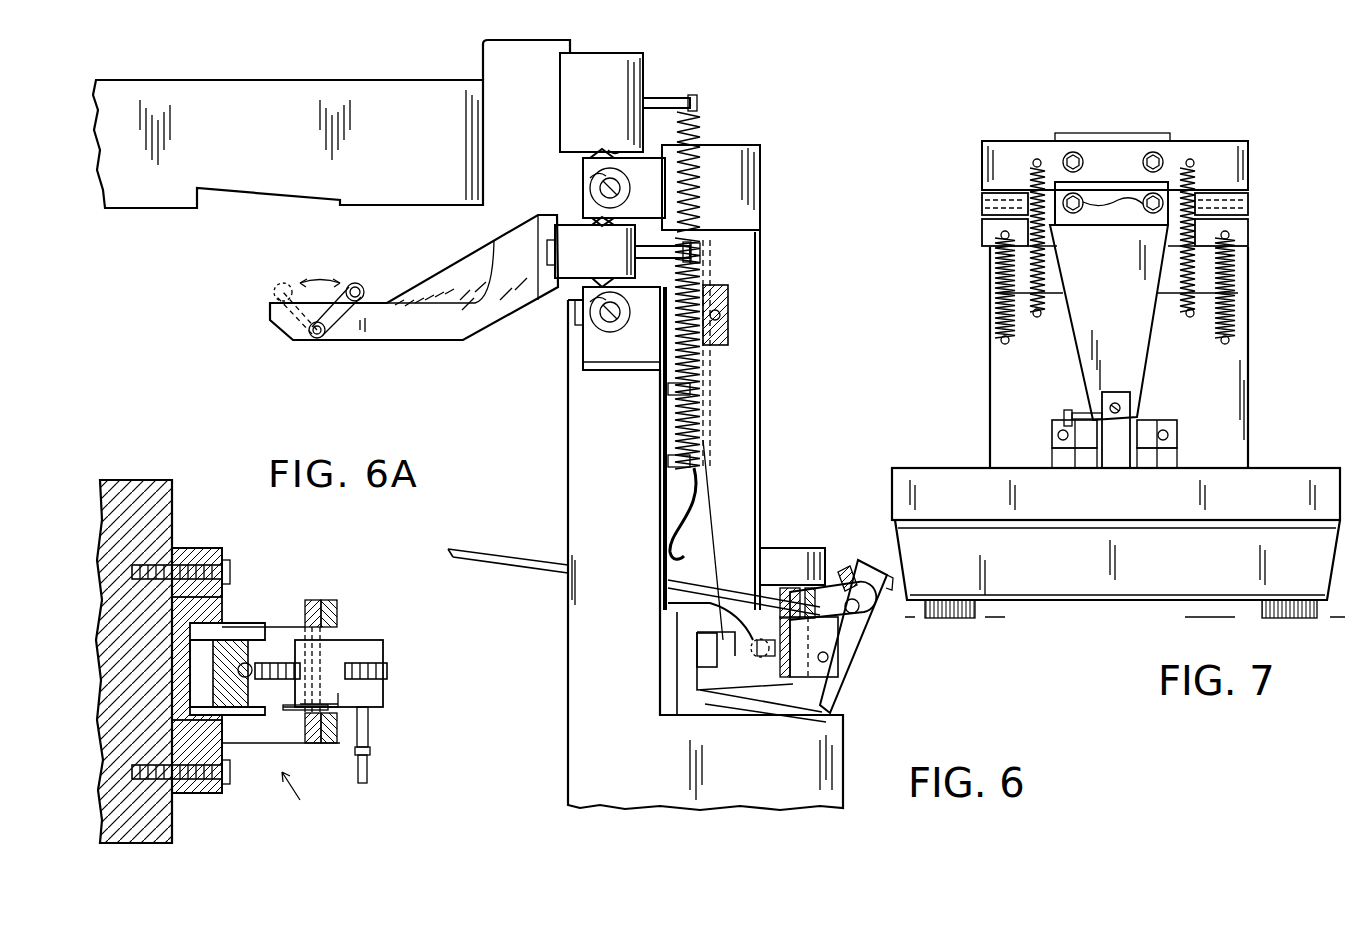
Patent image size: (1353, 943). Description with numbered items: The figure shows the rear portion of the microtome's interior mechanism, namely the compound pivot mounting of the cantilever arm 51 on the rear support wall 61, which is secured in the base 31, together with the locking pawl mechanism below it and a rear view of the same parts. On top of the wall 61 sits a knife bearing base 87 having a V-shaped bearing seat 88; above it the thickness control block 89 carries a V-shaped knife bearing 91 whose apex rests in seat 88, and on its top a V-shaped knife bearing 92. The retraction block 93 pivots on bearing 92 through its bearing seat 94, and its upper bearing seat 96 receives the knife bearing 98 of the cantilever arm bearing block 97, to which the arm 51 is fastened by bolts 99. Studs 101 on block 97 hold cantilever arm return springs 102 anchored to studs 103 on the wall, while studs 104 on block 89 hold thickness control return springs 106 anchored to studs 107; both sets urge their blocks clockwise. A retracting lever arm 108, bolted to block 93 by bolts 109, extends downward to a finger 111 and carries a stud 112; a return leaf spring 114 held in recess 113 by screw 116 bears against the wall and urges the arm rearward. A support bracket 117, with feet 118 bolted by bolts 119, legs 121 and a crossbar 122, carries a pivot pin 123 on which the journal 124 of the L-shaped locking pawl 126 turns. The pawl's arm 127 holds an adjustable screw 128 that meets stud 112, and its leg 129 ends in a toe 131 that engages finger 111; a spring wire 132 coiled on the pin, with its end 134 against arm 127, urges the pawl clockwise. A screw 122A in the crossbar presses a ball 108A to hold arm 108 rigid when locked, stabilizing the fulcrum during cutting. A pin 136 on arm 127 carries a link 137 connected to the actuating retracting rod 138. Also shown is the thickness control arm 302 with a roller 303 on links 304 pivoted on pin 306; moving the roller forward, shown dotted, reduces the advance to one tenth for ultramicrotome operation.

In FIG. 7, the base 31 is at (1072, 572).
In FIG. 6, the cantilever arm 51 is at (283, 95).
In FIG. 6, the rear support wall 61 is at (598, 514).
In FIG. 6A, the rear support wall 61 is at (180, 828).
In FIG. 7, the rear support wall 61 is at (1225, 382).
In FIG. 6, the knife bearing base 87 is at (627, 365).
In FIG. 7, the knife bearing base 87 is at (992, 282).
In FIG. 6, the V-shaped bearing seat 88 is at (592, 295).
In FIG. 6, the thickness control block 89 is at (576, 261).
In FIG. 7, the thickness control block 89 is at (986, 234).
In FIG. 6, the V-shaped knife bearing 91 is at (638, 258).
In FIG. 6, the V-shaped knife bearing 92 is at (624, 188).
In FIG. 6, the retraction block 93 is at (696, 146).
In FIG. 7, the retraction block 93 is at (982, 203).
In FIG. 6, the V-shaped bearing seat 94 is at (598, 212).
In FIG. 6, the V-shaped bearing seat 96 is at (592, 158).
In FIG. 6, the cantilever arm bearing block 97 is at (600, 58).
In FIG. 7, the cantilever arm bearing block 97 is at (1000, 146).
In FIG. 6, the V-shaped knife bearing 98 is at (613, 152).
In FIG. 7, the bolts 99 is at (1145, 160).
In FIG. 6, the studs 101 is at (680, 98).
In FIG. 7, the studs 101 is at (1037, 159).
In FIG. 6, the cantilever arm return springs 102 is at (698, 180).
In FIG. 7, the cantilever arm return springs 102 is at (1030, 178).
In FIG. 6, the studs 103 is at (686, 392).
In FIG. 7, the studs 103 is at (1037, 318).
In FIG. 6, the studs 104 is at (702, 270).
In FIG. 7, the studs 104 is at (1001, 236).
In FIG. 6, the thickness control return springs 106 is at (690, 444).
In FIG. 7, the thickness control return springs 106 is at (997, 312).
In FIG. 6, the studs 107 is at (690, 486).
In FIG. 7, the studs 107 is at (1000, 343).
In FIG. 6, the retracting lever arm 108 is at (745, 452).
In FIG. 6A, the retracting lever arm 108 is at (213, 656).
In FIG. 7, the retracting lever arm 108 is at (1101, 301).
In FIG. 6, the ball 108A is at (670, 604).
In FIG. 6A, the ball 108A is at (245, 662).
In FIG. 7, the bolts 109 is at (1111, 204).
In FIG. 6, the finger 111 is at (698, 663).
In FIG. 6, the stud 112 is at (790, 548).
In FIG. 6, the recess 113 is at (730, 294).
In FIG. 6, the return leaf spring 114 is at (714, 556).
In FIG. 6, the screw 116 is at (722, 320).
In FIG. 6A, the support bracket 117 is at (301, 802).
In FIG. 6, the feet 118 is at (697, 642).
In FIG. 6A, the feet 118 is at (200, 550).
In FIG. 7, the feet 118 is at (1052, 430).
In FIG. 6A, the bolts 119 is at (222, 552).
In FIG. 7, the bolts 119 is at (1058, 438).
In FIG. 6, the legs 121 is at (792, 684).
In FIG. 6A, the legs 121 is at (337, 606).
In FIG. 6A, the crossbar 122 is at (254, 640).
In FIG. 6, the screw 122A is at (771, 664).
In FIG. 6A, the screw 122A is at (278, 660).
In FIG. 6, the pivot pin 123 is at (836, 682).
In FIG. 6A, the pivot pin 123 is at (314, 600).
In FIG. 6A, the journal 124 is at (370, 667).
In FIG. 6, the L-shaped locking pawl 126 is at (845, 714).
In FIG. 7, the L-shaped locking pawl 126 is at (1110, 462).
In FIG. 6, the arm 127 is at (830, 660).
In FIG. 6A, the arm 127 is at (388, 688).
In FIG. 6, the adjustable screw 128 is at (846, 566).
In FIG. 6A, the adjustable screw 128 is at (320, 690).
In FIG. 7, the adjustable screw 128 is at (1122, 408).
In FIG. 6, the leg 129 is at (752, 702).
In FIG. 6, the toe 131 is at (705, 664).
In FIG. 6A, the toe 131 is at (196, 692).
In FIG. 6A, the spring wire 132 is at (300, 712).
In FIG. 6A, the end of spring wire 134 is at (340, 702).
In FIG. 6, the pin 136 is at (862, 627).
In FIG. 6A, the pin 136 is at (372, 770).
In FIG. 7, the pin 136 is at (1062, 416).
In FIG. 7, the link 137 is at (1070, 409).
In FIG. 6, the actuating retracting rod 138 is at (512, 567).
In FIG. 6, the thickness control arm 302 is at (468, 330).
In FIG. 6, the roller 303 is at (278, 292).
In FIG. 6, the links 304 is at (270, 322).
In FIG. 6, the pin 306 is at (317, 339).